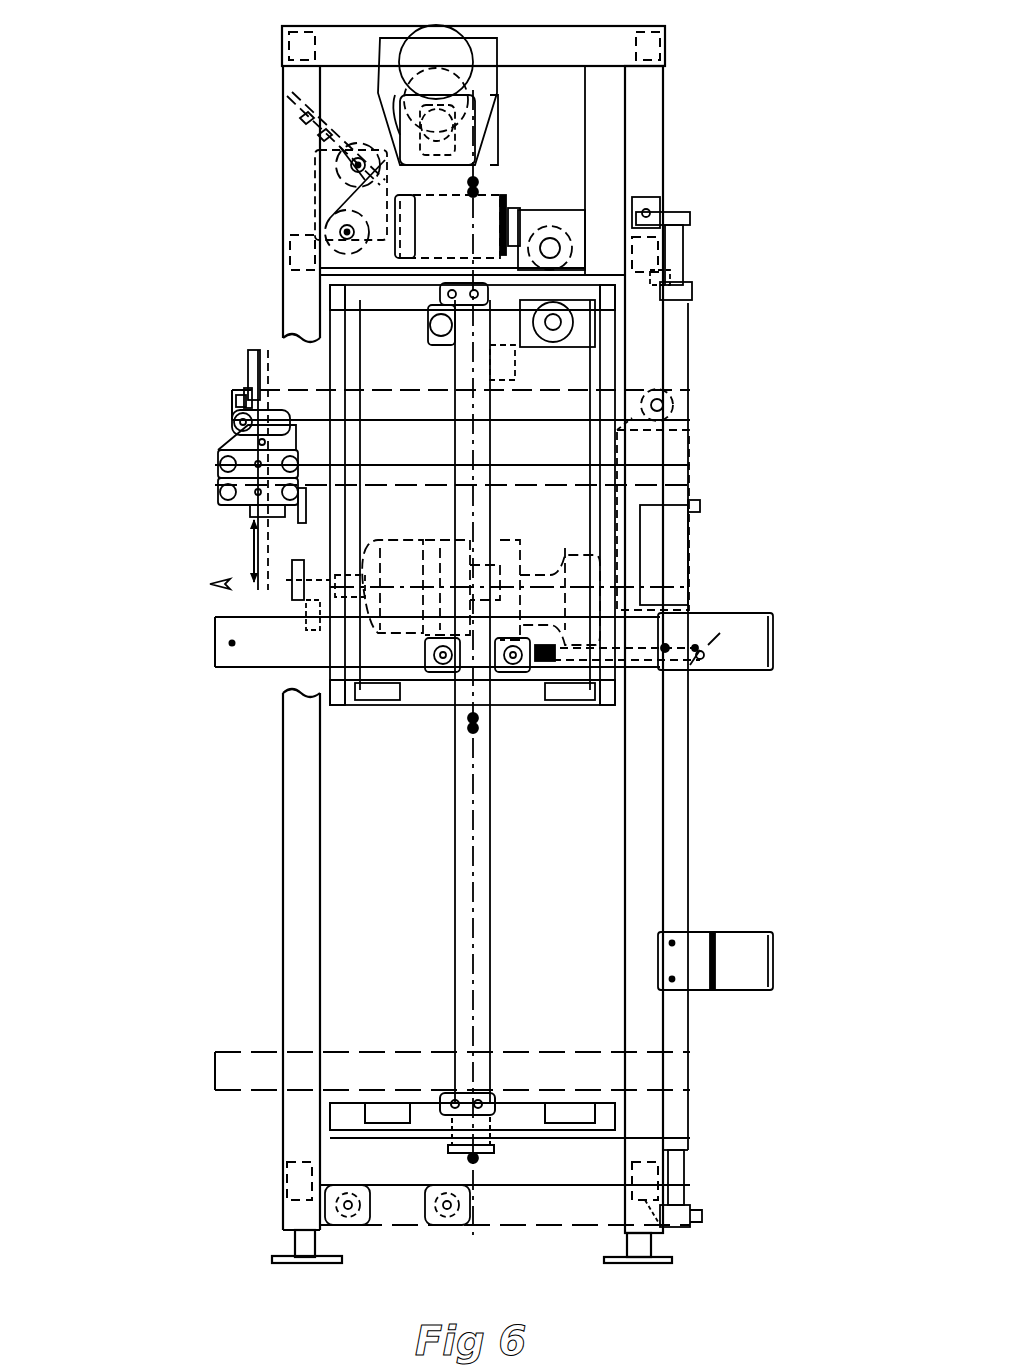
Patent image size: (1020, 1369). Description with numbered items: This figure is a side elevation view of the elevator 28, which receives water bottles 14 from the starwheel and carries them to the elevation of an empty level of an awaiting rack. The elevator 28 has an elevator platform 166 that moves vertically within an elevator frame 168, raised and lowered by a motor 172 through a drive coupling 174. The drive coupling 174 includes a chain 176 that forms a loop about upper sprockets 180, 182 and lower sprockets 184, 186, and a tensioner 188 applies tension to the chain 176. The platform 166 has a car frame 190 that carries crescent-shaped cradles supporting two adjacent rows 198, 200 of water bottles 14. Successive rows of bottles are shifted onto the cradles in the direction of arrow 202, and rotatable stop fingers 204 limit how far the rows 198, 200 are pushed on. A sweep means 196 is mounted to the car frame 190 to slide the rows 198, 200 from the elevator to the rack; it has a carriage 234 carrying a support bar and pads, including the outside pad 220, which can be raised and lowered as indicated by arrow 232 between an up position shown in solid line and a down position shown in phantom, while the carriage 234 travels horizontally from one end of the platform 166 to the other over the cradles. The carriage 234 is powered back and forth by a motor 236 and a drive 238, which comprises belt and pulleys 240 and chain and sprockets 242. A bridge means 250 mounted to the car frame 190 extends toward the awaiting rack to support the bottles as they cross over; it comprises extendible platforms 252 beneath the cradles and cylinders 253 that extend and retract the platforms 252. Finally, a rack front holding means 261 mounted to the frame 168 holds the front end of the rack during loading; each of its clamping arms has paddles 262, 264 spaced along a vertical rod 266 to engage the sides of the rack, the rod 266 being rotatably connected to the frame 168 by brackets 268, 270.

The water bottles 14 is at (373, 568).
The elevator 28 is at (168, 269).
The elevator platform 166 is at (200, 468).
The elevator frame 168 is at (300, 952).
The motor 172 is at (422, 35).
The drive coupling 174 is at (487, 125).
The chain 176 is at (472, 920).
The upper sprocket 180 is at (548, 119).
The upper sprocket 182 is at (318, 224).
The lower sprocket 184 is at (352, 1223).
The lower sprocket 186 is at (450, 1223).
The tensioner 188 is at (345, 145).
The car frame 190 is at (333, 363).
The sweep means 196 is at (208, 495).
The row of water bottles 198 is at (409, 558).
The row of water bottles 200 is at (688, 558).
The arrow 202 is at (218, 592).
The stop fingers 204 is at (720, 635).
The pad 220 is at (300, 520).
The arrow 232 is at (244, 552).
The carriage 234 is at (237, 450).
The motor 236 is at (493, 247).
The drive 238 is at (590, 230).
The belt and pulleys 240 is at (570, 240).
The chain and sprockets 242 is at (407, 385).
The bridge means 250 is at (705, 675).
The extendible platforms 252 is at (693, 645).
The cylinders 253 is at (552, 673).
The rack front holding means 261 is at (727, 853).
The paddle 262 is at (770, 964).
The paddle 264 is at (757, 645).
The vertical rod 266 is at (680, 902).
The bracket 268 is at (692, 1212).
The bracket 270 is at (692, 288).